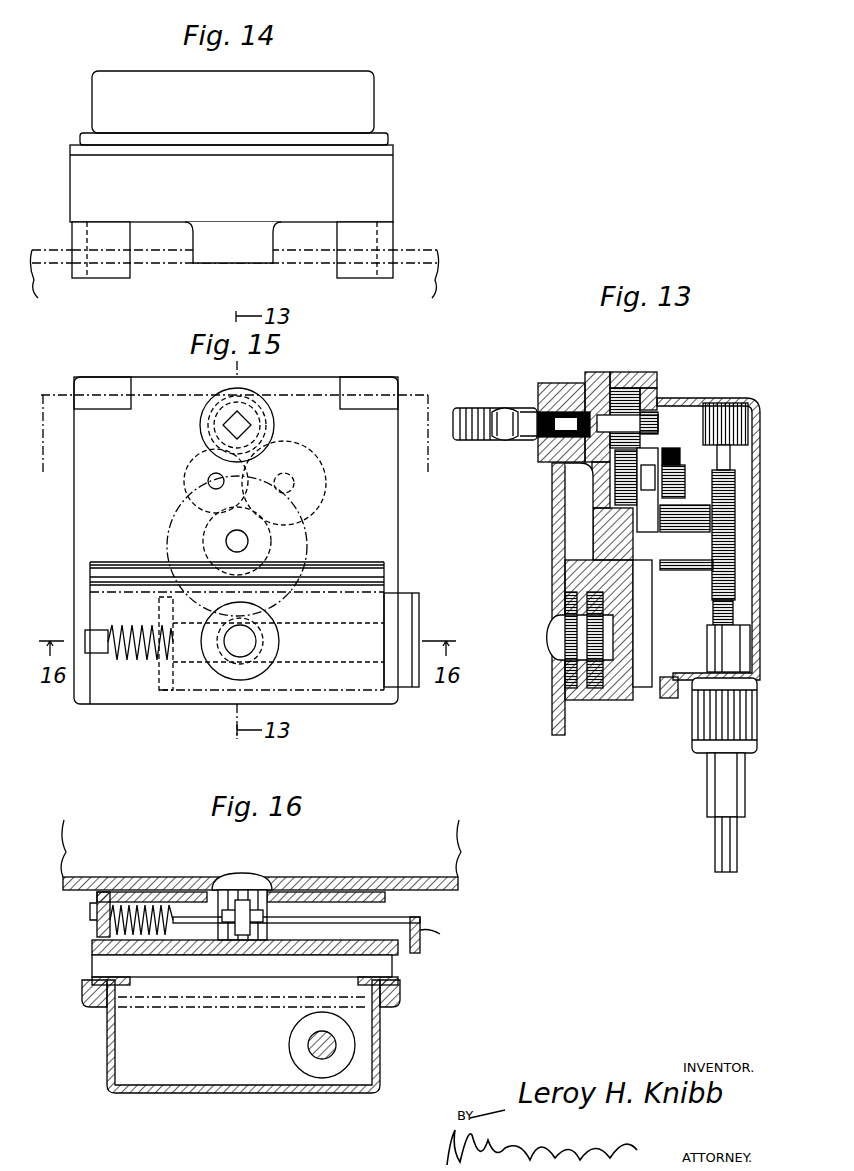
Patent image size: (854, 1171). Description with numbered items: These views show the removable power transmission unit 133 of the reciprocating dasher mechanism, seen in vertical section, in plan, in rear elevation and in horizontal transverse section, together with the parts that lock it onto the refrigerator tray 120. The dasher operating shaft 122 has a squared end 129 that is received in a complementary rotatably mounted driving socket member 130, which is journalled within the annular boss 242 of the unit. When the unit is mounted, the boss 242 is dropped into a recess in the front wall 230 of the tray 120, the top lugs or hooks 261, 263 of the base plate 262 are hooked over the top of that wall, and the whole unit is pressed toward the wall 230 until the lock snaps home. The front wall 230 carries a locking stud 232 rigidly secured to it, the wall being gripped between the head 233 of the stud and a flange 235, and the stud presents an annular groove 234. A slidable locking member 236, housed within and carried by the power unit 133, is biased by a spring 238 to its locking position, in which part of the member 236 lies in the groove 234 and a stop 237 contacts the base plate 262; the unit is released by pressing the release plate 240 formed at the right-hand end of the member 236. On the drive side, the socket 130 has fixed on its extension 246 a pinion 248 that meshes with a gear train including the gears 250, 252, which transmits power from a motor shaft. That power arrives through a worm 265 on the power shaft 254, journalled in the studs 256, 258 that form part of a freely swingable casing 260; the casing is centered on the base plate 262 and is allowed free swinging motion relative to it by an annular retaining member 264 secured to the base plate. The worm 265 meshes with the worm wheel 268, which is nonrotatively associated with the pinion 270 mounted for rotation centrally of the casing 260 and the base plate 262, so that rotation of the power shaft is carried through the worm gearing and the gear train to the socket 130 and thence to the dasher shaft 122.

In FIG. 14, the refrigerator tray 120 is at (423, 247).
In FIG. 15, the refrigerator tray 120 is at (414, 393).
In FIG. 13, the operating shaft 122 is at (457, 406).
In FIG. 13, the squared end 129 is at (550, 383).
In FIG. 13, the driving socket member 130 is at (567, 384).
In FIG. 14, the power transmission unit 133 is at (293, 183).
In FIG. 15, the power transmission unit 133 is at (236, 540).
In FIG. 16, the power transmission unit 133 is at (268, 1036).
In FIG. 15, the front wall 230 is at (237, 633).
In FIG. 13, the front wall 230 is at (553, 722).
In FIG. 16, the front wall 230 is at (180, 878).
In FIG. 16, the locking stud 232 is at (286, 900).
In FIG. 16, the head 233 is at (238, 877).
In FIG. 16, the annular groove 234 is at (240, 938).
In FIG. 16, the flange 235 is at (276, 897).
In FIG. 15, the locking member 236 is at (340, 662).
In FIG. 13, the locking member 236 is at (580, 640).
In FIG. 16, the locking member 236 is at (413, 911).
In FIG. 16, the stop 237 is at (96, 907).
In FIG. 15, the spring 238 is at (145, 662).
In FIG. 16, the spring 238 is at (130, 890).
In FIG. 15, the release plate 240 is at (419, 618).
In FIG. 16, the release plate 240 is at (440, 934).
In FIG. 14, the annular boss 242 is at (223, 249).
In FIG. 15, the annular boss 242 is at (203, 432).
In FIG. 13, the annular boss 242 is at (567, 479).
In FIG. 13, the extension 246 is at (657, 421).
In FIG. 13, the pinion 248 is at (622, 390).
In FIG. 13, the gear 250 is at (677, 443).
In FIG. 13, the gear 252 is at (615, 486).
In FIG. 13, the power shaft 254 is at (735, 458).
In FIG. 13, the stud 256 is at (733, 404).
In FIG. 13, the stud 258 is at (733, 651).
In FIG. 14, the casing 260 is at (375, 83).
In FIG. 13, the casing 260 is at (758, 474).
In FIG. 16, the casing 260 is at (247, 1093).
In FIG. 14, the lug 261 is at (103, 273).
In FIG. 15, the lug 261 is at (108, 406).
In FIG. 14, the base plate 262 is at (393, 176).
In FIG. 13, the base plate 262 is at (623, 702).
In FIG. 16, the base plate 262 is at (92, 946).
In FIG. 14, the lug 263 is at (372, 272).
In FIG. 15, the lug 263 is at (371, 409).
In FIG. 14, the annular retaining member 264 is at (385, 133).
In FIG. 13, the annular retaining member 264 is at (670, 700).
In FIG. 16, the annular retaining member 264 is at (95, 1008).
In FIG. 13, the worm 265 is at (713, 614).
In FIG. 13, the worm wheel 268 is at (733, 584).
In FIG. 13, the pinion 270 is at (683, 568).